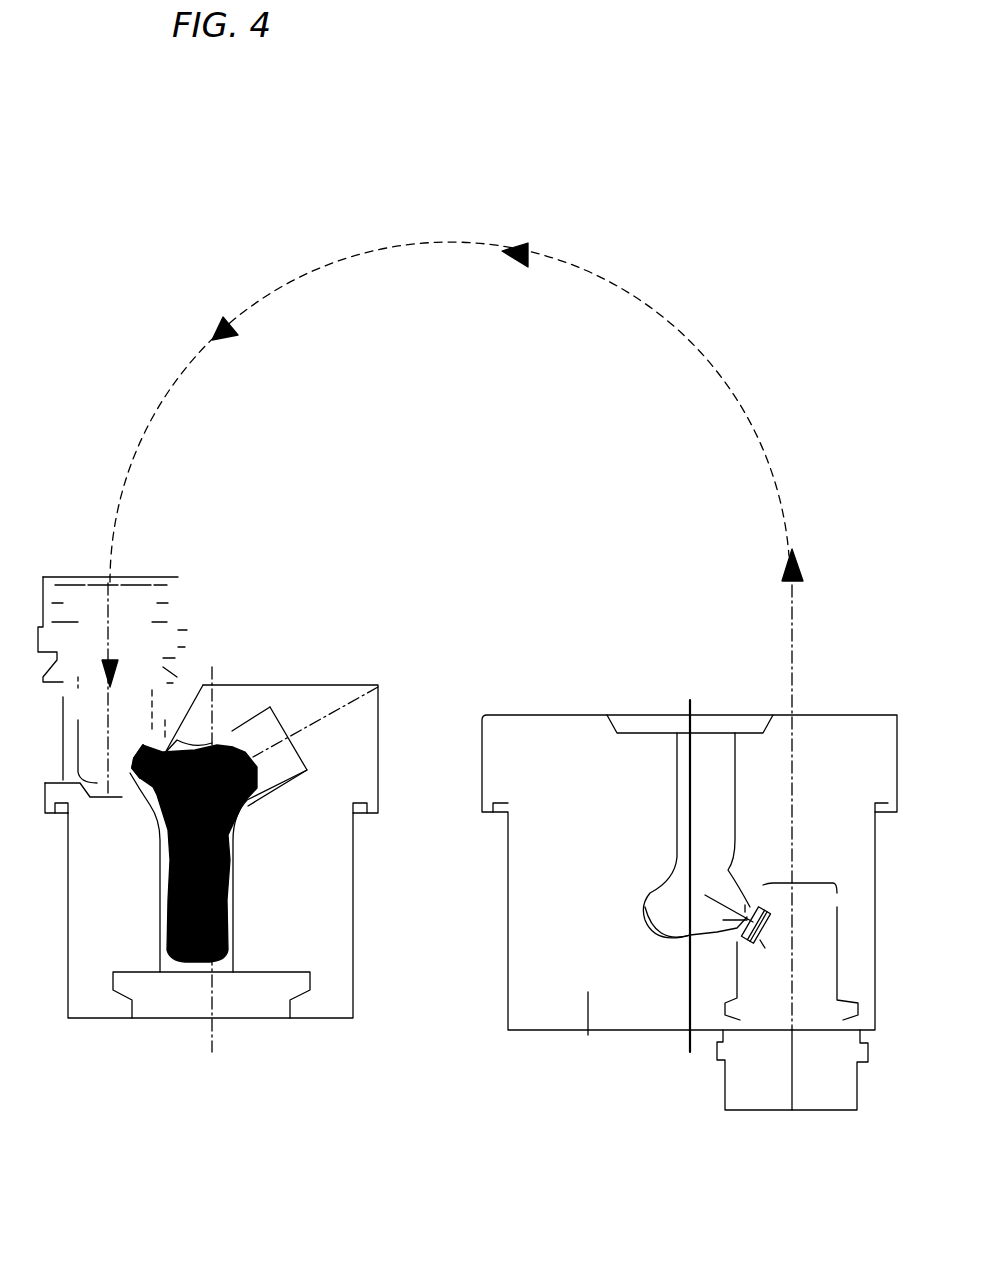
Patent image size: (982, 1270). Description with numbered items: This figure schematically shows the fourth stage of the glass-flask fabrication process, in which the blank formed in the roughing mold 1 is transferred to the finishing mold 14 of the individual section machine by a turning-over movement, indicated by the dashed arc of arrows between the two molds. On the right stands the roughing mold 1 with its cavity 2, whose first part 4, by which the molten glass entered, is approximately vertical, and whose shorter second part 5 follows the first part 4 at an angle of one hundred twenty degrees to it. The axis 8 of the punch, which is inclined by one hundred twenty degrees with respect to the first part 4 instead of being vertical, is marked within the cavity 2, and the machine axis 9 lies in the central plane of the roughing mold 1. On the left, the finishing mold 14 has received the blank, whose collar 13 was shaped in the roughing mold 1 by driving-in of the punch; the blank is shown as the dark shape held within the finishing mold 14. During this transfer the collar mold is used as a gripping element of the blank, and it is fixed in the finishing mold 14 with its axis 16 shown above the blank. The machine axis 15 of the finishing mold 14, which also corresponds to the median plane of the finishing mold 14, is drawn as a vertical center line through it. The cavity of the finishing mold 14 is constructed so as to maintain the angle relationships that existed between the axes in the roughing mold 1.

The roughing mold 1 is at (818, 713).
The cavity 2 is at (733, 800).
The first part 4 is at (678, 808).
The second part 5 is at (643, 905).
The axis of the punch 8 is at (707, 893).
The machine axis 9 is at (690, 702).
The collar 13 is at (138, 826).
The finishing mold 14 is at (313, 685).
The machine axis of the finishing mold 15 is at (212, 1052).
The axis of the collar mold 16 is at (140, 752).